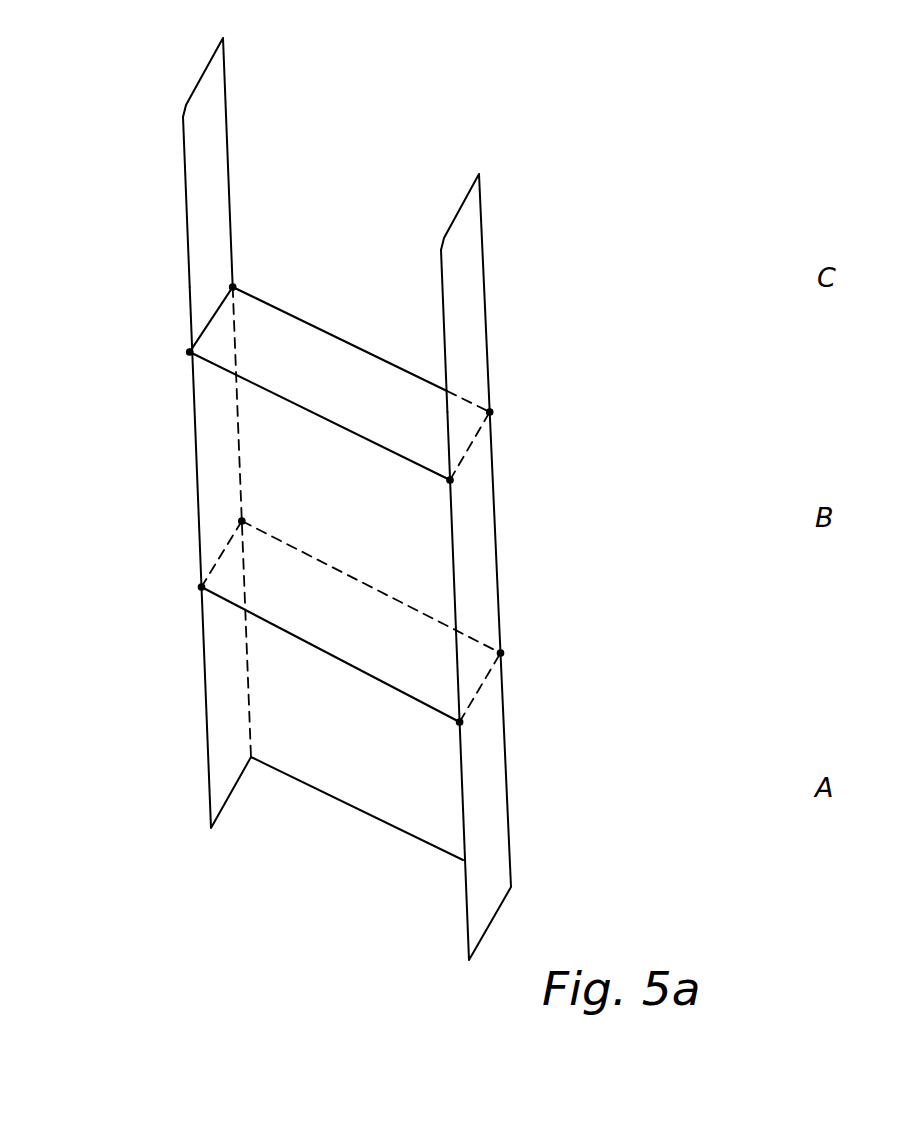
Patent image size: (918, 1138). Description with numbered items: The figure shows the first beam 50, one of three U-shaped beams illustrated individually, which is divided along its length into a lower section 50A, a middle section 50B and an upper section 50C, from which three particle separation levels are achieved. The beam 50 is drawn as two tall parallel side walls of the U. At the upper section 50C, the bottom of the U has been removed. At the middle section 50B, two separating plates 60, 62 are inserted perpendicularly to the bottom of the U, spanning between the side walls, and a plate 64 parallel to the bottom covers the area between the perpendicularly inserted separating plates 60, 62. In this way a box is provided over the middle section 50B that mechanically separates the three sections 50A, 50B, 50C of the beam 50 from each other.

The first beam 50 is at (147, 91).
The lower section 50A is at (423, 780).
The middle section 50B is at (325, 512).
The upper section 50C is at (372, 222).
The separating plate 60 is at (370, 372).
The separating plate 62 is at (347, 619).
The plate 64 is at (277, 442).